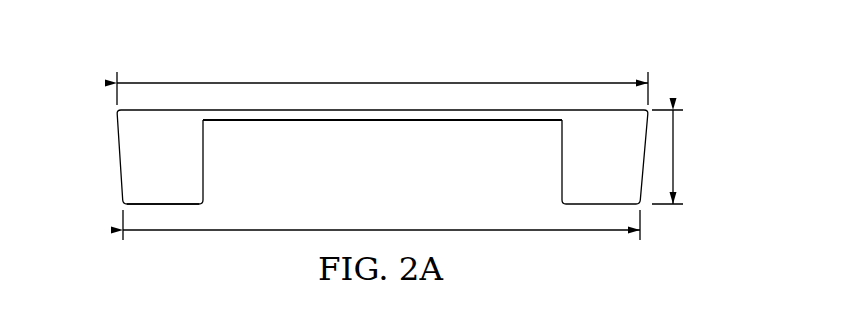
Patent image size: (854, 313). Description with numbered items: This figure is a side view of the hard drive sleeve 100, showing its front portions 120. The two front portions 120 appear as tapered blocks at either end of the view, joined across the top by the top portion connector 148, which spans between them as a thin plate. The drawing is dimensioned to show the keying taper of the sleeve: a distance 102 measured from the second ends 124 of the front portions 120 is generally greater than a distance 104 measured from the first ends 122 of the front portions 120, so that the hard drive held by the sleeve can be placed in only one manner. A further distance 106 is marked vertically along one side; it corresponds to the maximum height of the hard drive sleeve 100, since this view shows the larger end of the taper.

The hard drive sleeve 100 is at (662, 52).
The distance 102 is at (382, 83).
The distance 104 is at (380, 229).
The distance 106 is at (677, 158).
The front portions 120 is at (181, 171).
The first ends 122 is at (113, 212).
The second ends 124 is at (103, 120).
The top portion connector 148 is at (312, 121).